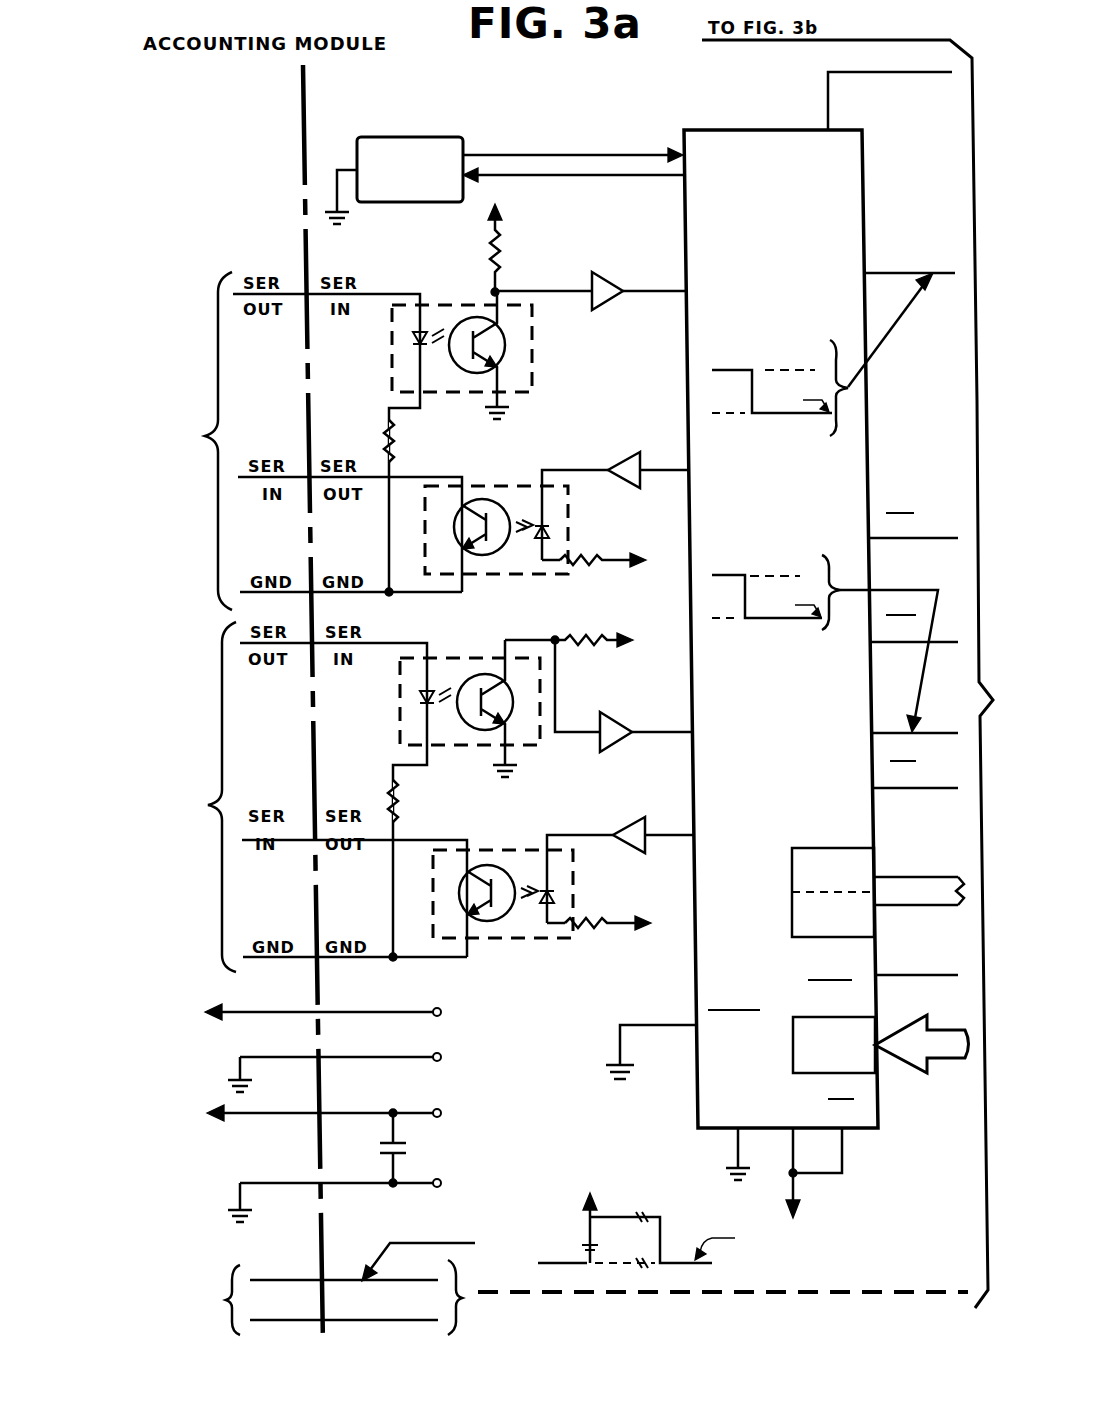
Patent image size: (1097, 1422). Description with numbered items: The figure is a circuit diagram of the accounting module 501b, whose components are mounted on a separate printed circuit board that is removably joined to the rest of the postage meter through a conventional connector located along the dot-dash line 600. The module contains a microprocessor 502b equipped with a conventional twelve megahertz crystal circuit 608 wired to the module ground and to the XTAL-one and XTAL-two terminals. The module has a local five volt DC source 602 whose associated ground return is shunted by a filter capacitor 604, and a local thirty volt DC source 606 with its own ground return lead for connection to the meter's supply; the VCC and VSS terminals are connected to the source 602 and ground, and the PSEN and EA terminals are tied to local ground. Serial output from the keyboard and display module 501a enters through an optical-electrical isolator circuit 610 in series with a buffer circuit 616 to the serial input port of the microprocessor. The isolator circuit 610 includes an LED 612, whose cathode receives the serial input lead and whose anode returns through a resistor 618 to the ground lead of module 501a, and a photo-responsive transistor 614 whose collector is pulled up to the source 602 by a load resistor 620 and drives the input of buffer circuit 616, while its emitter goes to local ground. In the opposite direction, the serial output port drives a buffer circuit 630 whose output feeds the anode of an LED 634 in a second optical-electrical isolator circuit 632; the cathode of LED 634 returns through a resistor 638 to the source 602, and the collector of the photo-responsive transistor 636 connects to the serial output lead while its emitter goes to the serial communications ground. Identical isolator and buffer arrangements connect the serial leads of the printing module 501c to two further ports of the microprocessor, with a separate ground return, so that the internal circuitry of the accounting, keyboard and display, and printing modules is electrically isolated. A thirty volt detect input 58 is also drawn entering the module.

The dot-dash line 600 is at (309, 126).
The accounting module 501b is at (240, 183).
The 12 MHz crystal circuit 608 is at (435, 136).
The microprocessor 502b is at (668, 251).
The keyboard and display module 501a is at (161, 441).
The printing module 501c is at (165, 797).
The resistor 618 is at (398, 445).
The optical-electrical isolator circuit 610 is at (535, 392).
The LED 612 is at (408, 342).
The photo-responsive transistor 614 is at (520, 352).
The load resistor 620 is at (500, 250).
The buffer circuit 616 is at (604, 306).
The buffer circuit 630 is at (612, 458).
The optical-electrical isolator circuit 632 is at (546, 578).
The photo-responsive transistor 636 is at (506, 495).
The LED 634 is at (560, 540).
The resistor 638 is at (600, 575).
The 30 V DC source 606 is at (562, 1009).
The filter capacitor 604 is at (420, 1141).
The 5 V DC source 602 is at (550, 1140).
The 30 V detect circuit 58 is at (299, 1302).